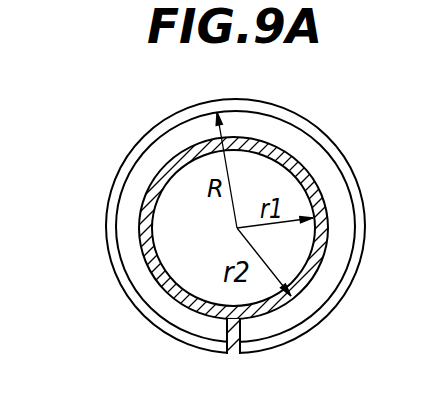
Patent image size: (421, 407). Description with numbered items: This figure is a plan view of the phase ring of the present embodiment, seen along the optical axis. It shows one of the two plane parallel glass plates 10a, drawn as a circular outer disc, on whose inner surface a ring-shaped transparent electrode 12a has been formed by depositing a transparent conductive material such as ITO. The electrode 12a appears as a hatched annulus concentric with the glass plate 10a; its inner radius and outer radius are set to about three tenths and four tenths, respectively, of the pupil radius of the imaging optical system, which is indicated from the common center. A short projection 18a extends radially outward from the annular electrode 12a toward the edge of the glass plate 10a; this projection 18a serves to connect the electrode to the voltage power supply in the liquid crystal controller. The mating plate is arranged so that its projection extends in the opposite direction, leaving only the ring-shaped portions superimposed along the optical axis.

The plane parallel glass plate 10a is at (102, 280).
The ring-shaped transparent electrode 12a is at (168, 162).
The projection 18a is at (227, 333).